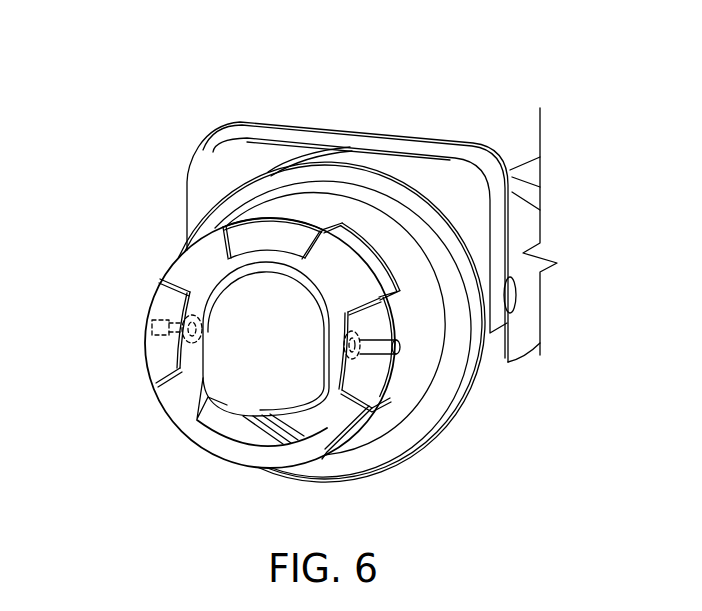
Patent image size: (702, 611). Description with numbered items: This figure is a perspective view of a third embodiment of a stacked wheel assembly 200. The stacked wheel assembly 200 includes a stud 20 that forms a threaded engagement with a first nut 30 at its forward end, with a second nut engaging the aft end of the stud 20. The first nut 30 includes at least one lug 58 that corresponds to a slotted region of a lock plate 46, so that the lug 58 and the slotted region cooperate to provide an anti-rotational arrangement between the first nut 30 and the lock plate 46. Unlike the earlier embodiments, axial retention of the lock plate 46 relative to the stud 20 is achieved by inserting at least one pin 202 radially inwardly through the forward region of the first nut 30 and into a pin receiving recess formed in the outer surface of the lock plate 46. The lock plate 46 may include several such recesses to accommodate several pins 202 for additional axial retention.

The stacked wheel assembly 200 is at (176, 82).
The first nut 30 is at (369, 112).
The stud 20 is at (524, 140).
The lock plate 46 is at (158, 250).
The lug 58 is at (160, 352).
The pin 202 is at (162, 306).